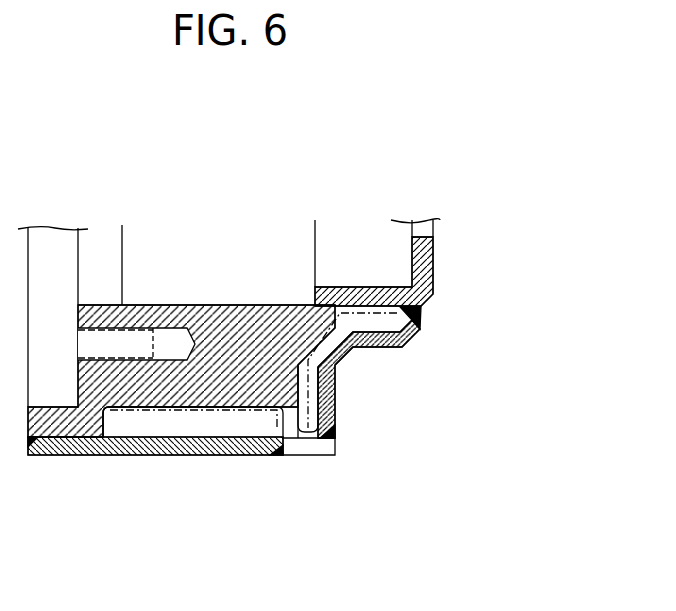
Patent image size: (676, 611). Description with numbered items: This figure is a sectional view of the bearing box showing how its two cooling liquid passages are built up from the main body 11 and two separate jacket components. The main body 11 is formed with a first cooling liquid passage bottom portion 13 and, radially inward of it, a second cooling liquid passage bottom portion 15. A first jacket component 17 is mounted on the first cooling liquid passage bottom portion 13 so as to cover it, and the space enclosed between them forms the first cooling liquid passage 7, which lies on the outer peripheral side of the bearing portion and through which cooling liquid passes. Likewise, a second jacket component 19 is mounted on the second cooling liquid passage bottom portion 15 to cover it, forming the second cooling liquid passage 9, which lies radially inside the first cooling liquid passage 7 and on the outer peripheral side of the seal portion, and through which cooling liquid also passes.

The main body 11 is at (433, 256).
The second jacket component 19 is at (431, 365).
The second cooling liquid passage bottom portion 15 is at (340, 359).
The second cooling liquid passage 9 is at (311, 387).
The first cooling liquid passage bottom portion 13 is at (255, 446).
The first cooling liquid passage 7 is at (182, 424).
The first jacket component 17 is at (105, 457).